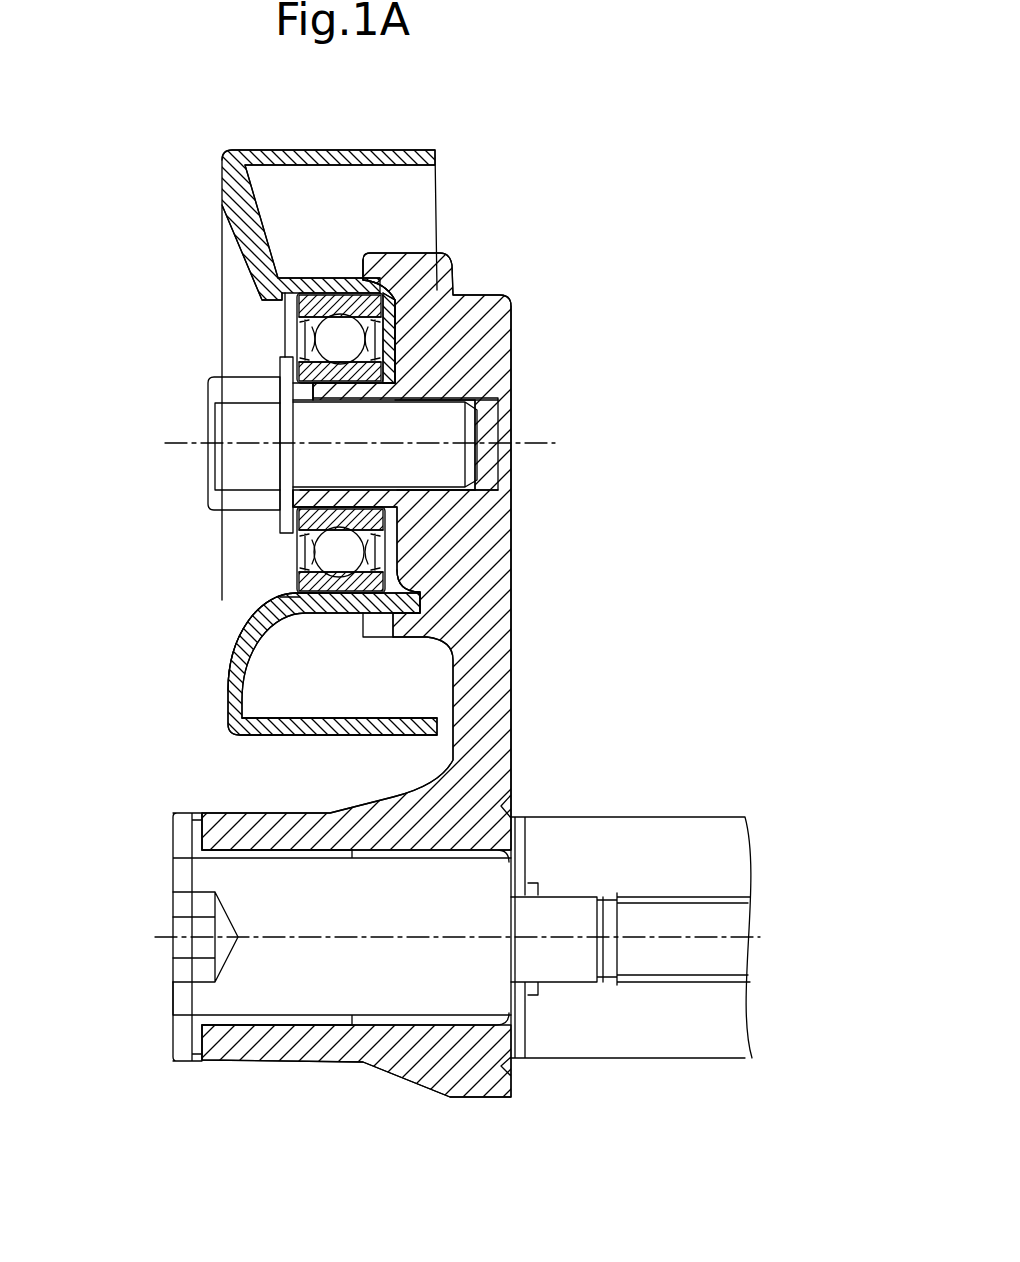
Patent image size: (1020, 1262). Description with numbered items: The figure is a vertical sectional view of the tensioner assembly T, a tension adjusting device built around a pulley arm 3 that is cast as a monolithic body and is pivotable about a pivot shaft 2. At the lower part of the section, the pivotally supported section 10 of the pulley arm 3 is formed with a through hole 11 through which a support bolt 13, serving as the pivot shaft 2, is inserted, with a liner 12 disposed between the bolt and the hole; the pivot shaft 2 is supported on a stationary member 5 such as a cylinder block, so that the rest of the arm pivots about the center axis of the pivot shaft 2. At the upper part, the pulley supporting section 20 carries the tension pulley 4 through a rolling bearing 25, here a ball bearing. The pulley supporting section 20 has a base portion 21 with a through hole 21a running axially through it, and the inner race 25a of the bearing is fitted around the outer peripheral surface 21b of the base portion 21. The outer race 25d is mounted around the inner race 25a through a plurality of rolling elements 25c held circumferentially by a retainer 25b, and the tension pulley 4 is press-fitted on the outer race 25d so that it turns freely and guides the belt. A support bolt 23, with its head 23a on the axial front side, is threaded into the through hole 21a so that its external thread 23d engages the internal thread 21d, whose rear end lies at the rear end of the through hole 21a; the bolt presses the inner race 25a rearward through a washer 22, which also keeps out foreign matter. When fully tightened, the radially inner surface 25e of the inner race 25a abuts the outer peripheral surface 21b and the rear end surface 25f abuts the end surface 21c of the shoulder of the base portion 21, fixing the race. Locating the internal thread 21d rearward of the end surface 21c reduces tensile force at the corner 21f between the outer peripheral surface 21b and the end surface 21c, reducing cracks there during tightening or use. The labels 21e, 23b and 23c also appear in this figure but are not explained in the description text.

The pivot shaft 2 is at (402, 994).
The pulley arm 3 is at (488, 743).
The tension pulley 4 is at (350, 157).
The stationary member 5 is at (660, 847).
The pivotally supported section 10 is at (173, 905).
The through hole 11 is at (248, 858).
The liner 12 is at (383, 1018).
The support bolt 13 is at (205, 1000).
The pulley supporting section 20 is at (523, 410).
The base portion 21 is at (366, 541).
The through hole 21a is at (423, 478).
The outer peripheral surface 21b is at (245, 655).
The end surface of shoulder 21c is at (345, 585).
The internal thread 21d is at (472, 498).
The housing inner surface 21e is at (420, 388).
The corner 21f is at (430, 500).
The washer 22 is at (285, 601).
The support bolt 23 is at (394, 427).
The head 23a is at (233, 470).
The collar shaft portion 23b is at (448, 437).
The collar flange 23c is at (285, 367).
The external thread 23d is at (473, 412).
The rolling bearing 25 is at (286, 283).
The inner race 25a is at (420, 353).
The retainer 25b is at (280, 287).
The rolling elements 25c is at (330, 335).
The outer race 25d is at (347, 297).
The radially inner surface 25e is at (293, 417).
The rear end surface 25f is at (390, 372).
The tensioner assembly T is at (190, 460).